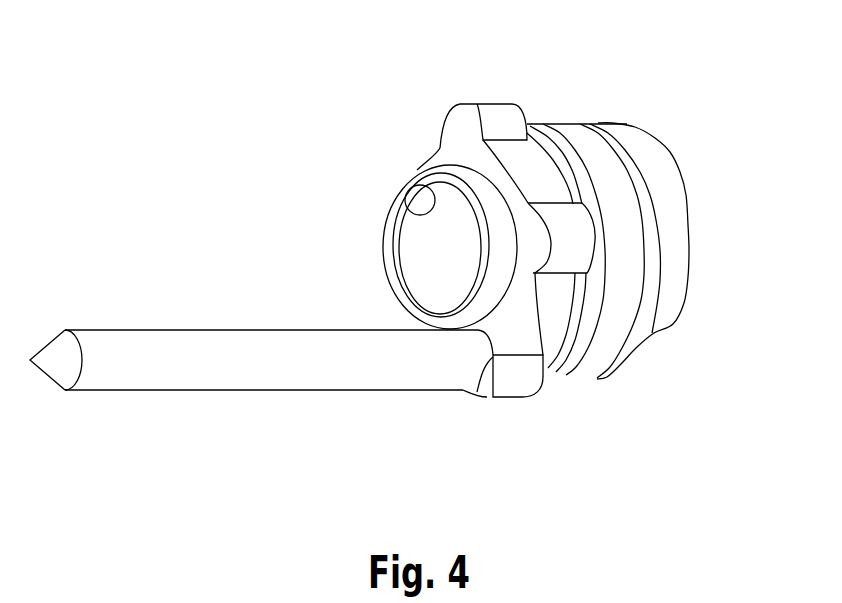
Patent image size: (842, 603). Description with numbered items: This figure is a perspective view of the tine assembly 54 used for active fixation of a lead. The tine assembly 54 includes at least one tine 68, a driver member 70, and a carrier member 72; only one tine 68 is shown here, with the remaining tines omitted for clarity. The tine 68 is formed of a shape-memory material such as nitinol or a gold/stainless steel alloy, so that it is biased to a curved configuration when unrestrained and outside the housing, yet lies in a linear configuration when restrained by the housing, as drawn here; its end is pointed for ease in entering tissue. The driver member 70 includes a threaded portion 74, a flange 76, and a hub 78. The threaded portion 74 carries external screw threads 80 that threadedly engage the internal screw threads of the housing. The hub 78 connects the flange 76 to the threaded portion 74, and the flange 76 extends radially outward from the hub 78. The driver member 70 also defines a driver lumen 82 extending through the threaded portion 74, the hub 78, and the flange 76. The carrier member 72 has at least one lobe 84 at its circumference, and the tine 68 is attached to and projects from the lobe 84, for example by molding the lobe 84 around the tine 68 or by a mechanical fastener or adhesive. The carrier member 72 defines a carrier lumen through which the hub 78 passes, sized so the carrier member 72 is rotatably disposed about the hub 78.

The tine assembly 54 is at (583, 113).
The tine 68 is at (183, 390).
The driver member 70 is at (682, 156).
The carrier member 72 is at (510, 97).
The threaded portion 74 is at (690, 247).
The flange 76 is at (497, 290).
The hub 78 is at (442, 245).
The external screw threads 80 is at (548, 377).
The driver lumen 82 is at (402, 213).
The lobe 84 is at (480, 102).